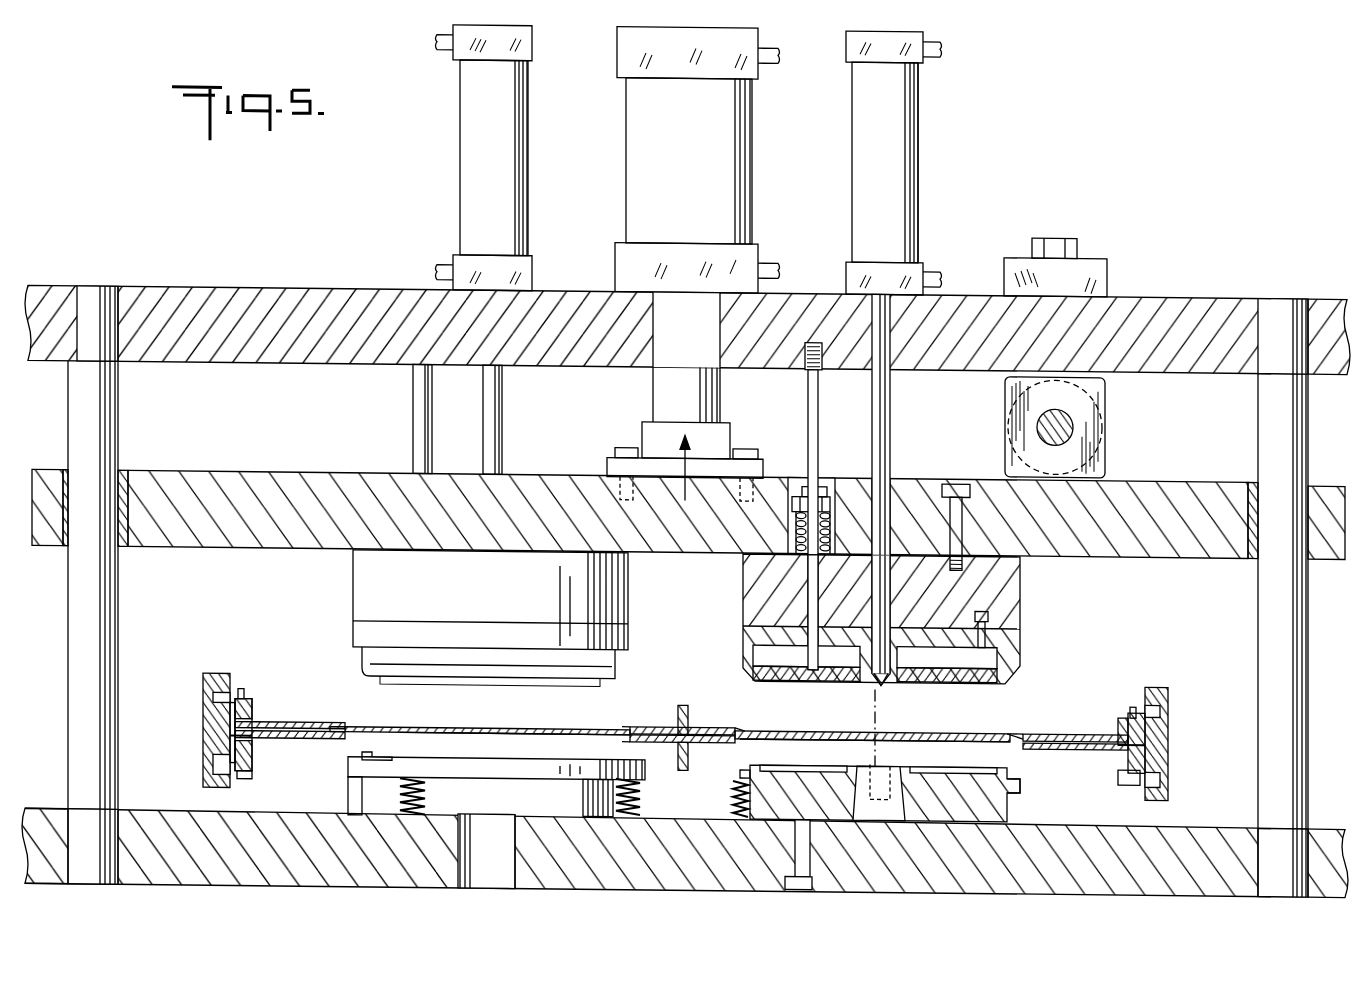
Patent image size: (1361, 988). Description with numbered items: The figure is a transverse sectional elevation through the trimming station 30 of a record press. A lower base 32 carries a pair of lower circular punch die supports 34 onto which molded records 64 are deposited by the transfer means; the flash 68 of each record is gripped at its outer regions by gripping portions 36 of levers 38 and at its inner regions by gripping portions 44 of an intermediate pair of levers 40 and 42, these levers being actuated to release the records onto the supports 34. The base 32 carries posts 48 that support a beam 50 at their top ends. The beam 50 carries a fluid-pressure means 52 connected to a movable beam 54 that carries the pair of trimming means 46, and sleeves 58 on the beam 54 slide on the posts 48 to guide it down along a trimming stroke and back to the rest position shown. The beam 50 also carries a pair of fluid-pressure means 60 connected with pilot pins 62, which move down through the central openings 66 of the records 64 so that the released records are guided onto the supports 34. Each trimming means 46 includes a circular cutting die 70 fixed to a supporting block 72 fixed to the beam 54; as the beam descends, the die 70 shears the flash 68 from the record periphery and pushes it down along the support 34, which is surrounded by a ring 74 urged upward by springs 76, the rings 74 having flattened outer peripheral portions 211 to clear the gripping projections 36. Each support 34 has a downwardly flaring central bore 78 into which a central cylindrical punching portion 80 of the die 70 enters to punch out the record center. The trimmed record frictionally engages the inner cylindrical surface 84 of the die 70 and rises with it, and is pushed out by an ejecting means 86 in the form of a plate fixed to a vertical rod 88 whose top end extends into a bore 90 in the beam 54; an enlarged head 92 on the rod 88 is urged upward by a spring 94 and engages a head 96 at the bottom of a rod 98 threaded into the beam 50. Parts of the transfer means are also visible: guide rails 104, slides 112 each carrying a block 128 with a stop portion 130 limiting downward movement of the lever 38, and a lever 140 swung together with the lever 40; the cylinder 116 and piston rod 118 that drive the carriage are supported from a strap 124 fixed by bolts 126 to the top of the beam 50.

The trimming station 30 is at (340, 573).
The lower base 32 is at (137, 820).
The punch die support 34 is at (355, 789).
The gripping portion 36 is at (303, 719).
The lever 38 is at (237, 739).
The intermediate lever 40 is at (685, 697).
The intermediate lever 42 is at (676, 755).
The gripping portion 44 is at (662, 720).
The trimming means 46 is at (343, 602).
The post 48 is at (108, 621).
The beam 50 is at (1193, 287).
The fluid-pressure means 52 is at (645, 148).
The movable beam 54 is at (280, 475).
The sleeve 58 is at (125, 469).
The fluid-pressure means 60 is at (468, 142).
The pilot pin 62 is at (492, 417).
The record 64 is at (425, 722).
The central opening 66 is at (490, 722).
The flash 68 is at (352, 721).
The circular cutting die 70 is at (358, 651).
The supporting block 72 is at (352, 616).
The ring 74 is at (348, 764).
The spring 76 is at (412, 778).
The central bore 78 is at (895, 765).
The central cylindrical punching portion 80 is at (893, 652).
The inner cylindrical surface 84 is at (1000, 641).
The ejecting means 86 is at (360, 671).
The vertical rod 88 is at (808, 591).
The bore 90 is at (828, 478).
The enlarged head 92 is at (805, 493).
The spring 94 is at (830, 516).
The head 96 is at (807, 481).
The rod 98 is at (425, 393).
The guide rail 104 is at (215, 669).
The slide 112 is at (203, 700).
The cylinder 116 is at (1006, 389).
The piston rod 118 is at (1062, 418).
The strap 124 is at (1097, 263).
The bolt 126 is at (1058, 234).
The block 128 is at (250, 700).
The stop portion 130 is at (245, 776).
The lever 140 is at (241, 694).
The flattened outer peripheral portion 211 is at (347, 756).